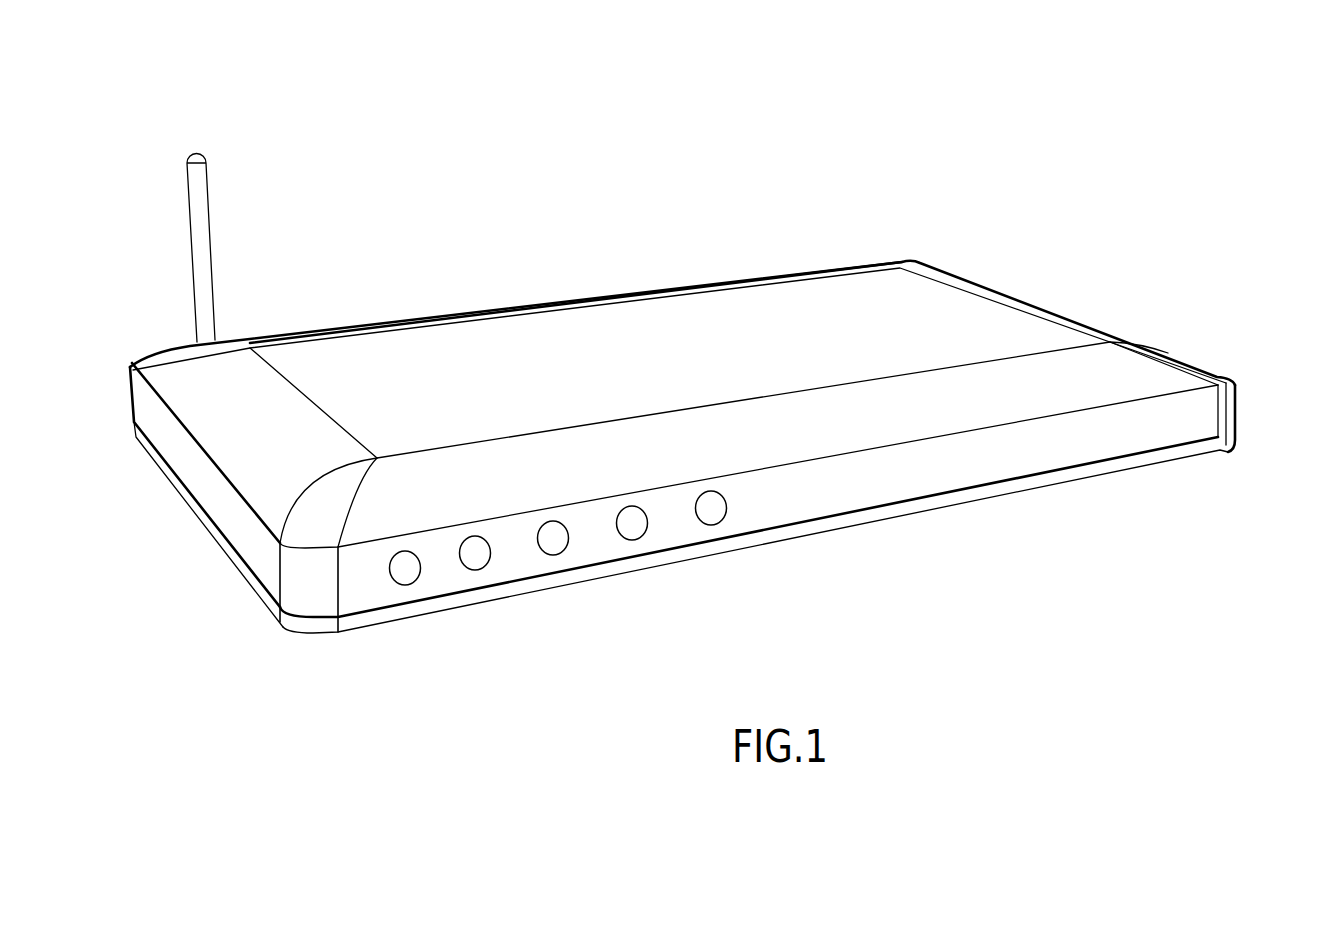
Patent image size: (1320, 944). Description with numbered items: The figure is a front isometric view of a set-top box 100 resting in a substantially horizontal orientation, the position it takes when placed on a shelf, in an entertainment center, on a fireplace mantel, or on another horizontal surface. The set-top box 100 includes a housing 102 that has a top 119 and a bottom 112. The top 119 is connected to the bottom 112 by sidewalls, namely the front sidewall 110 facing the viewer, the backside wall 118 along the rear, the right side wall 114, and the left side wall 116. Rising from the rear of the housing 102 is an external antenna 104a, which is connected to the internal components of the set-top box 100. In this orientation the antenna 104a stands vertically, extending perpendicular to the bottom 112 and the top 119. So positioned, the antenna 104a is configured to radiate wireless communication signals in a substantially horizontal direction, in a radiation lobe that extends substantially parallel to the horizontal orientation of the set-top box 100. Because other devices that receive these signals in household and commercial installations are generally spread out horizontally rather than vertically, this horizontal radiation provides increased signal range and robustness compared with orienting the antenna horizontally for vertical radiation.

The set-top box 100 is at (982, 113).
The housing 102 is at (1012, 302).
The external antenna 104a is at (203, 230).
The front sidewall 110 is at (1122, 435).
The bottom 112 is at (822, 543).
The right side wall 114 is at (1197, 347).
The left side wall 116 is at (213, 487).
The backside wall 118 is at (558, 295).
The top 119 is at (812, 312).